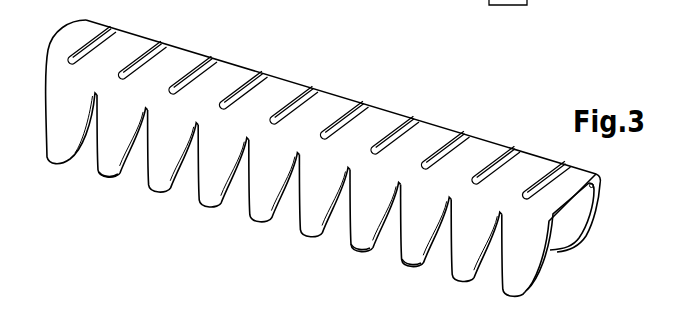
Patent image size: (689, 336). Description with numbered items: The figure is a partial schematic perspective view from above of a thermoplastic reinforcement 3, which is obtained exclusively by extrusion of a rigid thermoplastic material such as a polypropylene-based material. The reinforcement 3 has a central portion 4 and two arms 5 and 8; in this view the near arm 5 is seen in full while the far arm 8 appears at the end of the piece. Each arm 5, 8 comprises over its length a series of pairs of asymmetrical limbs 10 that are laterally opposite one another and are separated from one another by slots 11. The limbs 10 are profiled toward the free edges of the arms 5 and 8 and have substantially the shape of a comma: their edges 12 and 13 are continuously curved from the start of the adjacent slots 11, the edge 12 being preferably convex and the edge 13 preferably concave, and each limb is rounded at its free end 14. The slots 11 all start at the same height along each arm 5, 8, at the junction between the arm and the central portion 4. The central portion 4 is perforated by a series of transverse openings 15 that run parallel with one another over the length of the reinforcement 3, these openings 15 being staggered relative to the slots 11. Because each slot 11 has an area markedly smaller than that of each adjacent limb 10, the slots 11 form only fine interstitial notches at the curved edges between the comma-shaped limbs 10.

The thermoplastic reinforcement 3 is at (354, 167).
The central portion 4 is at (367, 166).
The arm 5 is at (548, 278).
The arm 8 is at (605, 227).
The asymmetrical limbs 10 is at (81, 129).
The slots 11 is at (86, 160).
The edge 12 is at (123, 175).
The edge 13 is at (351, 243).
The free end 14 is at (417, 262).
The transverse openings 15 is at (157, 47).